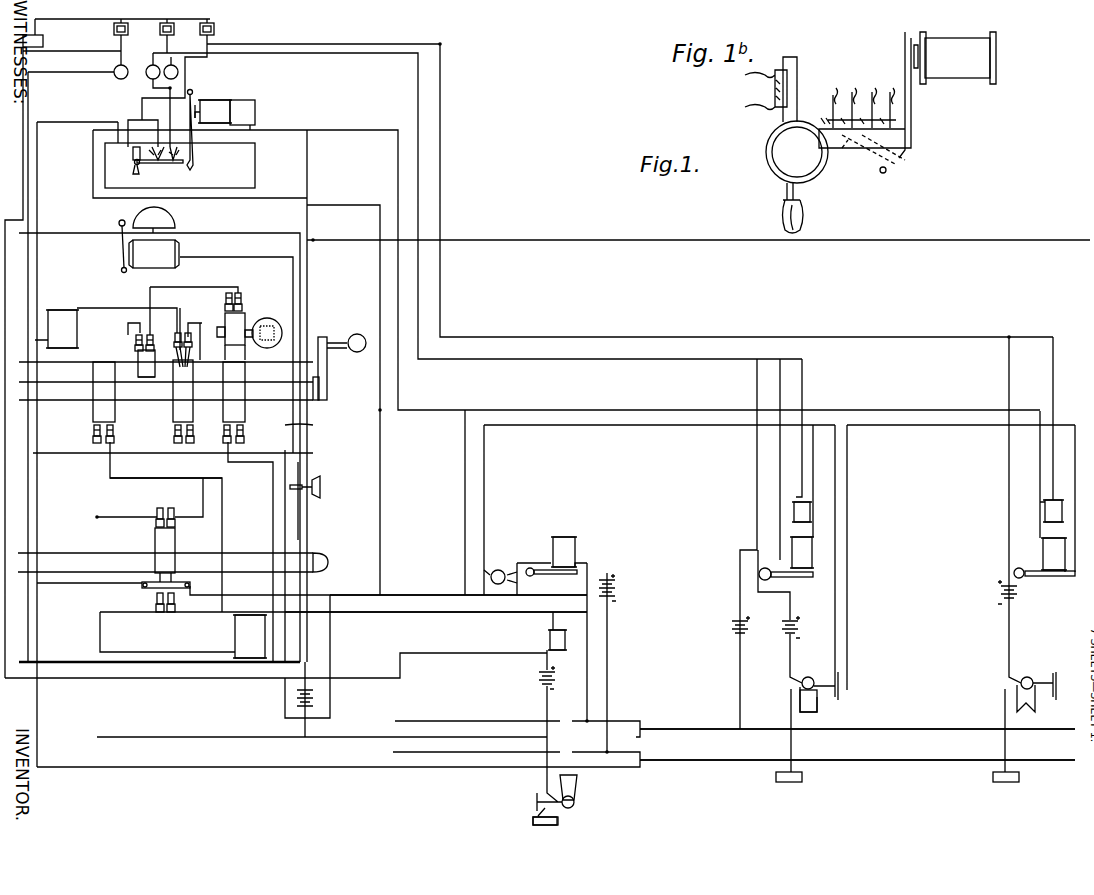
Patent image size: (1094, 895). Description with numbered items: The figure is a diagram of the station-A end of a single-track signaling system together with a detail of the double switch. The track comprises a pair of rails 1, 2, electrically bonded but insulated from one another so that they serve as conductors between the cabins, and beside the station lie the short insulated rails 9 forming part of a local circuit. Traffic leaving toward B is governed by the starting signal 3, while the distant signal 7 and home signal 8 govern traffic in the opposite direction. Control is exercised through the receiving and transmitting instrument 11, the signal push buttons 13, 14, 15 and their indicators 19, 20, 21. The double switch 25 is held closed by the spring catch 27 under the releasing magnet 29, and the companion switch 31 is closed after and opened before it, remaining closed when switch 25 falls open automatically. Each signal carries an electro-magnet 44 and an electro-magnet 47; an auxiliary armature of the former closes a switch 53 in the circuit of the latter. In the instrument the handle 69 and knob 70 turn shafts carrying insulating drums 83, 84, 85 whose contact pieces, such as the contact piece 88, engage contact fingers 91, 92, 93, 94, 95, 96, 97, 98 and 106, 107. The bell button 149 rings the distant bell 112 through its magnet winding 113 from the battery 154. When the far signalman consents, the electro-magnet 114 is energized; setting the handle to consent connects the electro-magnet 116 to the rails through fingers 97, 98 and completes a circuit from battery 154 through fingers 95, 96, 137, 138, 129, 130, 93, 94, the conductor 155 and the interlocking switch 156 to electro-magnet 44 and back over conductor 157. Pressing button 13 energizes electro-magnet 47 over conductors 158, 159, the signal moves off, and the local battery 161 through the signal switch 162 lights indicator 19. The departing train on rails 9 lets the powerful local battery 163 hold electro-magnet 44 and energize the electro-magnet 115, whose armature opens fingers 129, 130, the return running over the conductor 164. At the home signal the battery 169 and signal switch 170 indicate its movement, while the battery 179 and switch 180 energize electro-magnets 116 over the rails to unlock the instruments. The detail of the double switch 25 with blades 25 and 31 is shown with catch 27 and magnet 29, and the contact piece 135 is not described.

In FIG. 1, the rail 1 is at (857, 762).
In FIG. 1, the rail 2 is at (857, 717).
In FIG. 1, the starting signal 3 is at (576, 797).
In FIG. 1, the distant signal 7 is at (1036, 686).
In FIG. 1, the home signal 8 is at (815, 701).
In FIG. 1, the short insulated track rails 9 is at (624, 727).
In FIG. 1, the receiving and transmitting instrument 11 is at (337, 268).
In FIG. 1, the signal push button 13 is at (118, 78).
In FIG. 1, the signal push button 14 is at (178, 74).
In FIG. 1, the signal push button 15 is at (149, 78).
In FIG. 1, the signal indicator 19 is at (114, 40).
In FIG. 1, the indicator 20 is at (200, 39).
In FIG. 1, the indicator 21 is at (160, 39).
In FIG. 1, the double switch 25 is at (180, 165).
In FIG. 1B, the double switch 25 is at (846, 148).
In FIG. 1, the spring catch 27 is at (193, 162).
In FIG. 1B, the spring catch 27 is at (912, 115).
In FIG. 1, the releasing magnet 29 is at (225, 112).
In FIG. 1B, the releasing magnet 29 is at (955, 58).
In FIG. 1, the switch 31 is at (123, 160).
In FIG. 1B, the switch 31 is at (800, 80).
In FIG. 1, the electro-magnet 44 is at (577, 549).
In FIG. 1, the electro-magnet 47 is at (550, 637).
In FIG. 1, the switch 53 is at (1047, 578).
In FIG. 1, the handle 69 is at (340, 358).
In FIG. 1, the knob 70 is at (329, 561).
In FIG. 1, the insulating drum 83 is at (234, 367).
In FIG. 1, the insulating drum 84 is at (183, 391).
In FIG. 1, the insulating drum 85 is at (104, 392).
In FIG. 1, the contact piece 88 is at (156, 363).
In FIG. 1, the contact finger 91 is at (177, 333).
In FIG. 1, the contact finger 92 is at (196, 350).
In FIG. 1, the contact finger 93 is at (219, 434).
In FIG. 1, the contact finger 94 is at (250, 434).
In FIG. 1, the contact finger 95 is at (174, 434).
In FIG. 1, the contact finger 96 is at (197, 440).
In FIG. 1, the contact finger 97 is at (93, 427).
In FIG. 1, the contact finger 98 is at (117, 440).
In FIG. 1, the contact finger 106 is at (175, 512).
In FIG. 1, the contact finger 107 is at (166, 552).
In FIG. 1, the bell 112 is at (154, 217).
In FIG. 1, the magnet winding 113 is at (149, 246).
In FIG. 1, the electro-magnet 114 is at (62, 329).
In FIG. 1, the electro-magnet 115 is at (269, 348).
In FIG. 1, the electro-magnet 116 is at (250, 636).
In FIG. 1, the contact finger 129 is at (226, 300).
In FIG. 1, the contact finger 130 is at (238, 293).
In FIG. 1, the relay 135 is at (146, 380).
In FIG. 1, the contact finger 137 is at (135, 342).
In FIG. 1, the contact finger 138 is at (163, 345).
In FIG. 1, the bell button 149 is at (321, 486).
In FIG. 1, the battery 154 is at (296, 702).
In FIG. 1, the conductor 155 is at (265, 556).
In FIG. 1, the interlocking switch 156 is at (500, 568).
In FIG. 1, the conductor 157 is at (458, 587).
In FIG. 1, the conductor 158 is at (303, 527).
In FIG. 1, the conductor 159 is at (138, 460).
In FIG. 1, the local battery 161 is at (538, 686).
In FIG. 1, the signal switch 162 is at (559, 819).
In FIG. 1, the local battery 163 is at (614, 581).
In FIG. 1, the conductor 164 is at (310, 425).
In FIG. 1, the battery 169 is at (786, 620).
In FIG. 1, the signal switch 170 is at (812, 674).
In FIG. 1, the battery 179 is at (733, 617).
In FIG. 1, the switch 180 is at (786, 582).